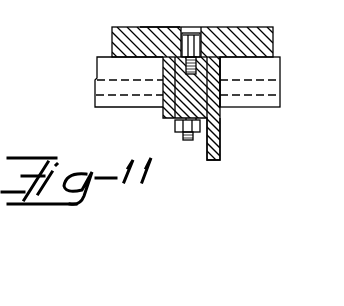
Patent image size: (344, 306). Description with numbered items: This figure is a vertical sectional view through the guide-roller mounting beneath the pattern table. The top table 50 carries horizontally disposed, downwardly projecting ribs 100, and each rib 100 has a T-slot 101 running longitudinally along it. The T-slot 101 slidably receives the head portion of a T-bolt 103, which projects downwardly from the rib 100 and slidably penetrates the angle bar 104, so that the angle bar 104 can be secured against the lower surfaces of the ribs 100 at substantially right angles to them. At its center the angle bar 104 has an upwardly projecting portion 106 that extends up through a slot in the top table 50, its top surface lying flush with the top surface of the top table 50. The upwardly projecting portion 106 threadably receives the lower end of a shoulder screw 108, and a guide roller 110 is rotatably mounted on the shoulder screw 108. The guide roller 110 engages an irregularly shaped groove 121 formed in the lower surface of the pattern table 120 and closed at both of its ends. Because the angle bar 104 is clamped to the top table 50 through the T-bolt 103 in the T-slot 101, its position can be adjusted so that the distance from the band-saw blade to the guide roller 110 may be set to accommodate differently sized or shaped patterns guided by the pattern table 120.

The top table 50 is at (283, 67).
The rib 100 is at (140, 108).
The T-slot 101 is at (251, 104).
The T-bolt 103 is at (180, 140).
The angle bar 104 is at (221, 151).
The upwardly projecting portion 106 is at (222, 70).
The shoulder screw 108 is at (193, 33).
The guide roller 110 is at (170, 27).
The pattern table 120 is at (276, 37).
The groove 121 is at (202, 32).